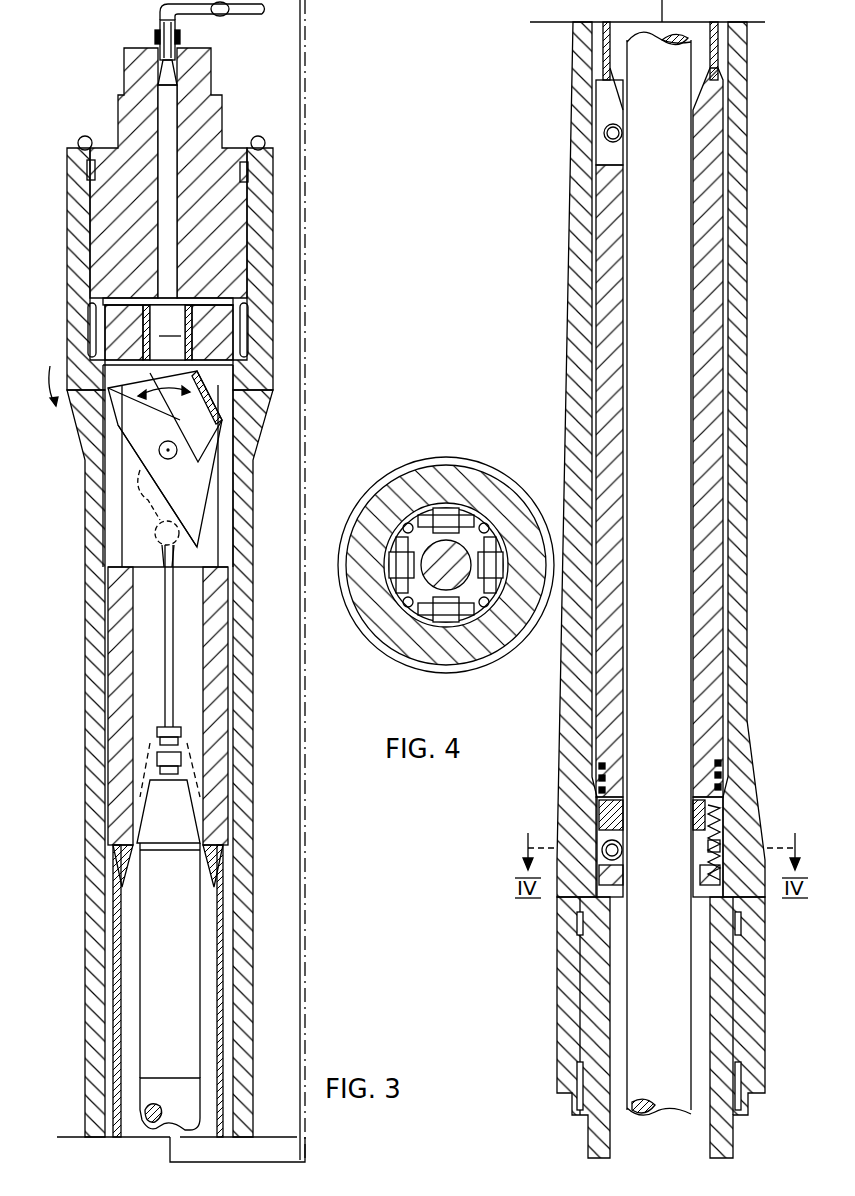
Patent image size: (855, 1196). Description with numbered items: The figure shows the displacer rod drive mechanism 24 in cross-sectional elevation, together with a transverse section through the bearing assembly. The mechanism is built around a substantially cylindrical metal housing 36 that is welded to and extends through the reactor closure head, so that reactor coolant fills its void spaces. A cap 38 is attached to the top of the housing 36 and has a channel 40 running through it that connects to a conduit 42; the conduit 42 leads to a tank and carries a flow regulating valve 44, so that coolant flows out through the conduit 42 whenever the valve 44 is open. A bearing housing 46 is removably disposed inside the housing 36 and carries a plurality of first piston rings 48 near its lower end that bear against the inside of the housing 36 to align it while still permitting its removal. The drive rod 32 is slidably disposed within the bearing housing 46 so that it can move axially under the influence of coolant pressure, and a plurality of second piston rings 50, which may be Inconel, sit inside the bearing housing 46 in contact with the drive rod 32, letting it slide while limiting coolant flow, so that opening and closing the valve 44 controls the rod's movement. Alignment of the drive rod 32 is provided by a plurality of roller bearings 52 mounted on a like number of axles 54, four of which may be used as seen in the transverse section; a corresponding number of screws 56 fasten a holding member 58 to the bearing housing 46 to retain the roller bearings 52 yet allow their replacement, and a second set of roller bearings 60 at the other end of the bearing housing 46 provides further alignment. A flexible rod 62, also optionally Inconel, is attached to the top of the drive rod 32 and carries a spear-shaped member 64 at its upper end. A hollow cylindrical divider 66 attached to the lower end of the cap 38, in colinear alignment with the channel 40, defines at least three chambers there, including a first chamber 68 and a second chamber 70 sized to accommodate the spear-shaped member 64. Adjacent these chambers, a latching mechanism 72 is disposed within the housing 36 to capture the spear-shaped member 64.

In FIG. 3, the displacer rod drive mechanism 24 is at (48, 373).
In FIG. 3, the drive rod 32 is at (179, 996).
In FIG. 4, the drive rod 32 is at (440, 520).
In FIG. 3, the housing 36 is at (245, 620).
In FIG. 4, the housing 36 is at (490, 650).
In FIG. 3, the cap 38 is at (205, 105).
In FIG. 3, the channel 40 is at (160, 118).
In FIG. 3, the conduit 42 is at (158, 24).
In FIG. 3, the flow regulating valve 44 is at (228, 16).
In FIG. 3, the bearing housing 46 is at (215, 830).
In FIG. 3, the first piston rings 48 is at (600, 765).
In FIG. 3, the second piston rings 50 is at (612, 812).
In FIG. 3, the roller bearings 52 is at (620, 852).
In FIG. 4, the roller bearings 52 is at (450, 512).
In FIG. 3, the axles 54 is at (616, 875).
In FIG. 4, the axles 54 is at (430, 518).
In FIG. 3, the screws 56 is at (768, 960).
In FIG. 4, the screws 56 is at (487, 525).
In FIG. 3, the holding member 58 is at (700, 870).
In FIG. 3, the second set of roller bearings 60 is at (590, 138).
In FIG. 3, the flexible rod 62 is at (163, 668).
In FIG. 3, the spear-shaped member 64 is at (158, 533).
In FIG. 3, the hollow cylindrical divider 66 is at (100, 330).
In FIG. 3, the first chamber 68 is at (128, 318).
In FIG. 3, the second chamber 70 is at (167, 332).
In FIG. 3, the latching mechanism 72 is at (222, 455).